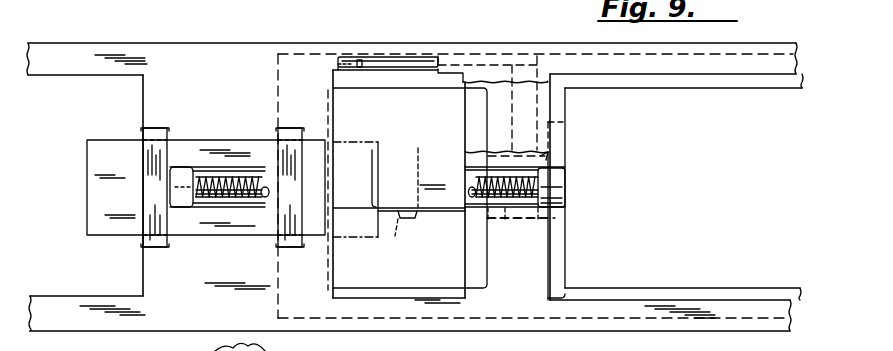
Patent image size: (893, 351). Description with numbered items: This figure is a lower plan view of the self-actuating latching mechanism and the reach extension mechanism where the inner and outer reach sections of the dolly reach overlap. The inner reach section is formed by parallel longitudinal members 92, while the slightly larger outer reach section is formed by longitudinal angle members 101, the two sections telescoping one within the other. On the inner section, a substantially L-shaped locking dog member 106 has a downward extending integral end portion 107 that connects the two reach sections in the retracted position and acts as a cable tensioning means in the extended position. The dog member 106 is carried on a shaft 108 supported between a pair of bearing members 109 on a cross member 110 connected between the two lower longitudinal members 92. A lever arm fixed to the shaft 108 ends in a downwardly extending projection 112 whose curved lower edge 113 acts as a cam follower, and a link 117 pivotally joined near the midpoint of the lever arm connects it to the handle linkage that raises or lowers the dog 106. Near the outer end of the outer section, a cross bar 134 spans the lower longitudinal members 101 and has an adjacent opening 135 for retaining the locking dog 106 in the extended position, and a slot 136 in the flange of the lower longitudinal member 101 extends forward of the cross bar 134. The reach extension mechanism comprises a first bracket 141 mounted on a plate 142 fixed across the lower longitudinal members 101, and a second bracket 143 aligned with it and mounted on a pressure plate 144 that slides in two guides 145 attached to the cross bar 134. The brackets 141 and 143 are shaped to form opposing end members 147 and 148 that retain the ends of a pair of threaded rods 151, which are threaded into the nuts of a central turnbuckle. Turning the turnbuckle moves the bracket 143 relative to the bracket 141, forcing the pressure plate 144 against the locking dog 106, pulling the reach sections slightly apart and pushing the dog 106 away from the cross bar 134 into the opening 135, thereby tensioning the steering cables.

The longitudinal member 92 is at (713, 88).
The longitudinal angle member 101 is at (733, 48).
The locking dog member 106 is at (410, 193).
The integral end portion 107 is at (357, 177).
The shaft 108 is at (563, 121).
The bearing member 109 is at (560, 147).
The cross member 110 is at (558, 238).
The projection 112 is at (338, 63).
The curved lower edge 113 is at (358, 58).
The link 117 is at (418, 212).
The cross bar 134 is at (249, 282).
The opening 135 is at (413, 270).
The slot 136 is at (380, 60).
The first bracket 141 is at (470, 163).
The plate 142 is at (537, 267).
The second bracket 143 is at (235, 162).
The pressure plate 144 is at (185, 228).
The guide 145 is at (153, 128).
The end member 147 is at (180, 183).
The end member 148 is at (551, 189).
The threaded rod 151 is at (231, 198).